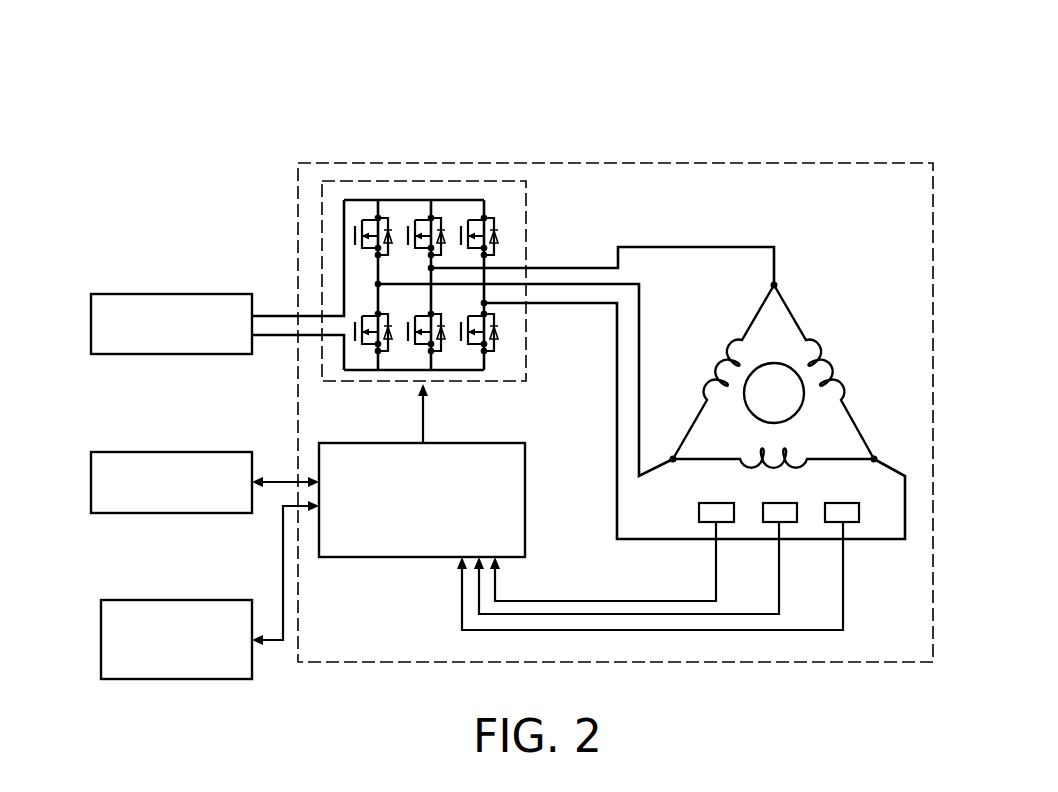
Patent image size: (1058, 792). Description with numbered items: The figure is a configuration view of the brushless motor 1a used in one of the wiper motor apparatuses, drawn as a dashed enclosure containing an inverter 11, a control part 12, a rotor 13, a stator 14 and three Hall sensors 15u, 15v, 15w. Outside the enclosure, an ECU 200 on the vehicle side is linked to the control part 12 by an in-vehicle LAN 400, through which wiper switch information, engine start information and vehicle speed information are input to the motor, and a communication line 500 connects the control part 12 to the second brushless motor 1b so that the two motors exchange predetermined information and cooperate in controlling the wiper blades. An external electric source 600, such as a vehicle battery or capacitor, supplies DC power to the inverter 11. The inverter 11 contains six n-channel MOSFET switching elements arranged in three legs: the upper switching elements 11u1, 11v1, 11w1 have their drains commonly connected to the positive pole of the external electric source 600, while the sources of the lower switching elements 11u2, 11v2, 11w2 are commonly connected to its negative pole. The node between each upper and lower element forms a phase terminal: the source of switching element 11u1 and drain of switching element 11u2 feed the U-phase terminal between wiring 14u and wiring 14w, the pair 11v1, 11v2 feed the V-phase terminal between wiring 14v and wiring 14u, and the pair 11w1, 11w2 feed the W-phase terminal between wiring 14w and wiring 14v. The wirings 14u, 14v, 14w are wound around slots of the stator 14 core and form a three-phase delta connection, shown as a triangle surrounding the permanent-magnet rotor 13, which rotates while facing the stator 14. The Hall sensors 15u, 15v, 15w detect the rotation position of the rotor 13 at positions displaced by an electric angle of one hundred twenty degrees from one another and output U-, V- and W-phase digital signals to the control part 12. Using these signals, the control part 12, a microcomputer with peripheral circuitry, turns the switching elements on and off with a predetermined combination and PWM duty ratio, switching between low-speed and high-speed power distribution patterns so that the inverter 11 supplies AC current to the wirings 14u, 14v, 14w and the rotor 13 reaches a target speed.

The brushless motor 1a is at (842, 163).
The brushless motor 1b is at (135, 600).
The inverter 11 is at (455, 283).
The switching element 11u1 is at (368, 222).
The switching element 11v1 is at (423, 221).
The switching element 11w1 is at (473, 221).
The switching element 11u2 is at (368, 345).
The switching element 11v2 is at (418, 348).
The switching element 11w2 is at (472, 347).
The control part 12 is at (527, 483).
The rotor 13 is at (775, 363).
The stator 14 is at (777, 362).
The wiring 14u is at (713, 357).
The wiring 14v is at (838, 365).
The wiring 14w is at (785, 452).
The Hall sensor 15u is at (699, 508).
The Hall sensor 15v is at (763, 508).
The Hall sensor 15w is at (840, 503).
The ECU 200 is at (142, 452).
The in-vehicle LAN 400 is at (283, 480).
The communication line 500 is at (283, 588).
The external electric source 600 is at (135, 293).